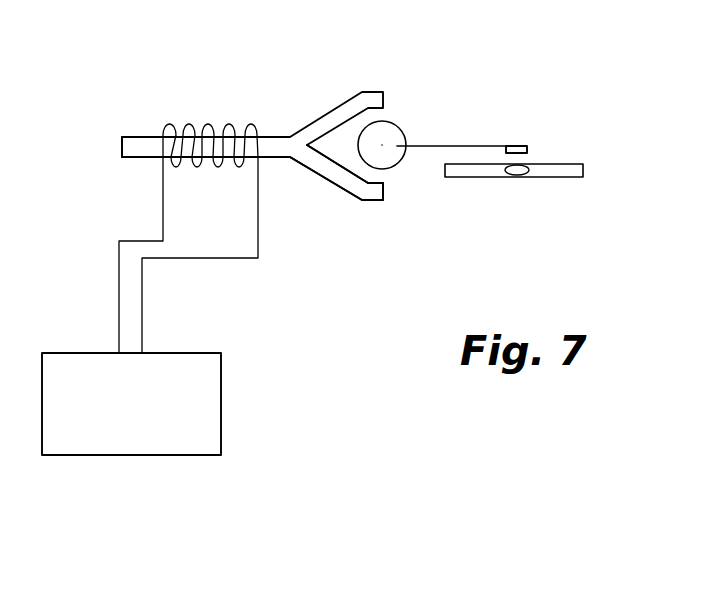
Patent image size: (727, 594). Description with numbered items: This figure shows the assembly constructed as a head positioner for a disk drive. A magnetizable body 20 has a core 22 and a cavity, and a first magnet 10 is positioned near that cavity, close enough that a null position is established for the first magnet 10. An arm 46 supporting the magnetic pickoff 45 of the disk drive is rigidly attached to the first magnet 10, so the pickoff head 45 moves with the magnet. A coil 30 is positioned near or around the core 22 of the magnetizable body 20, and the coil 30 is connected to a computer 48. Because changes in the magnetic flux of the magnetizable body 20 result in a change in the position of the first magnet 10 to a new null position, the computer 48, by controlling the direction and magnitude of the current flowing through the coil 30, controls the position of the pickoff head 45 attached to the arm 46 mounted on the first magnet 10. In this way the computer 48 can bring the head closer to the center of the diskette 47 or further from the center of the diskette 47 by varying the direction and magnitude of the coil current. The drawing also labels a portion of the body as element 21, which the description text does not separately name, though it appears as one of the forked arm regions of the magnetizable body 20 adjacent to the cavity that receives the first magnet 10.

The first magnet 10 is at (393, 130).
The magnetizable body 20 is at (154, 120).
The forked arm 21 is at (338, 183).
The core 22 is at (147, 149).
The coil 30 is at (222, 126).
The magnetic pickoff 45 is at (527, 152).
The arm 46 is at (438, 146).
The diskette 47 is at (560, 168).
The computer 48 is at (150, 306).